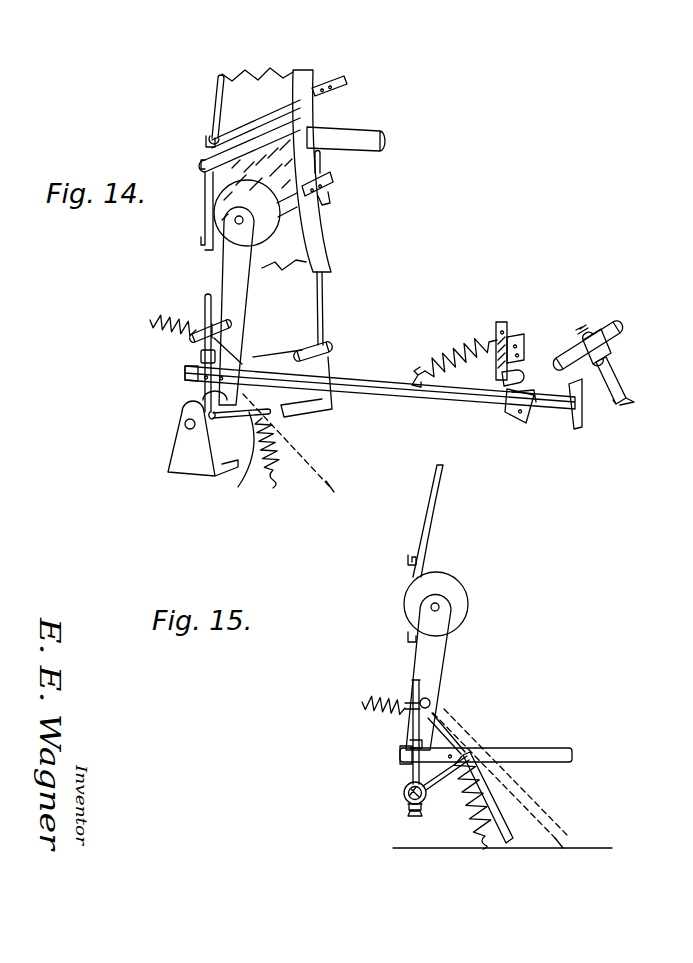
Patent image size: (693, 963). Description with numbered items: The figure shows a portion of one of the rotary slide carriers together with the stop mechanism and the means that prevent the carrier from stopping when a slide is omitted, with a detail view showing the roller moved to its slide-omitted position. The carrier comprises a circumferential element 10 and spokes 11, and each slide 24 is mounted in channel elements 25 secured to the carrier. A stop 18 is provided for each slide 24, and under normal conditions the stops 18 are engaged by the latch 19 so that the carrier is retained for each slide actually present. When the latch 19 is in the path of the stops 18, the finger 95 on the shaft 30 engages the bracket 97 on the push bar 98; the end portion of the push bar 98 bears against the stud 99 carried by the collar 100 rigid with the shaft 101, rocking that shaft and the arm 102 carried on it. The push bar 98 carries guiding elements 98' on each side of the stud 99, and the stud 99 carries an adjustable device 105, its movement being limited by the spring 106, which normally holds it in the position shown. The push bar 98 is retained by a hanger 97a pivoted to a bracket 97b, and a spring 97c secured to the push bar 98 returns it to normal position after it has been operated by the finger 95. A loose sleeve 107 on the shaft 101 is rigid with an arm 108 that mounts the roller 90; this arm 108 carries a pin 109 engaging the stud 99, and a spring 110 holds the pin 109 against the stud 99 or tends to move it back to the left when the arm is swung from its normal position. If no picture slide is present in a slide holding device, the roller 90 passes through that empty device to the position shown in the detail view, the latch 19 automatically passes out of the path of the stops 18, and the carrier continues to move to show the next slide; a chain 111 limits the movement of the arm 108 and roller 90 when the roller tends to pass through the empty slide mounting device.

In FIG. 14, the circumferential element 10 is at (318, 110).
In FIG. 15, the circumferential element 10 is at (433, 512).
In FIG. 14, the spokes 11 is at (384, 140).
In FIG. 14, the stops 18 is at (333, 85).
In FIG. 14, the latch 19 is at (334, 191).
In FIG. 14, the slide 24 is at (215, 91).
In FIG. 14, the channel elements 25 is at (207, 140).
In FIG. 15, the channel elements 25 is at (408, 557).
In FIG. 14, the shaft 30 is at (620, 327).
In FIG. 14, the roller 90 is at (225, 211).
In FIG. 15, the roller 90 is at (458, 600).
In FIG. 14, the finger 95 is at (623, 381).
In FIG. 14, the bracket 97 is at (582, 408).
In FIG. 14, the hanger 97a is at (517, 418).
In FIG. 14, the bracket 97b is at (509, 328).
In FIG. 14, the spring 97c is at (461, 346).
In FIG. 14, the push bar 98 is at (380, 400).
In FIG. 15, the push bar 98 is at (486, 739).
In FIG. 14, the guiding elements 98' is at (166, 365).
In FIG. 15, the guiding elements 98' is at (372, 752).
In FIG. 14, the stud 99 is at (206, 298).
In FIG. 15, the stud 99 is at (413, 686).
In FIG. 14, the collar 100 is at (183, 412).
In FIG. 14, the shaft 101 is at (330, 347).
In FIG. 14, the arm 102 is at (325, 293).
In FIG. 14, the adjustable device 105 is at (217, 357).
In FIG. 14, the spring 106 is at (280, 452).
In FIG. 15, the spring 106 is at (468, 806).
In FIG. 14, the loose sleeve 107 is at (232, 459).
In FIG. 14, the arm 108 is at (252, 268).
In FIG. 15, the arm 108 is at (435, 658).
In FIG. 14, the pin 109 is at (228, 322).
In FIG. 15, the pin 109 is at (432, 702).
In FIG. 14, the spring 110 is at (150, 320).
In FIG. 15, the spring 110 is at (362, 700).
In FIG. 14, the chain 111 is at (318, 477).
In FIG. 15, the chain 111 is at (528, 814).